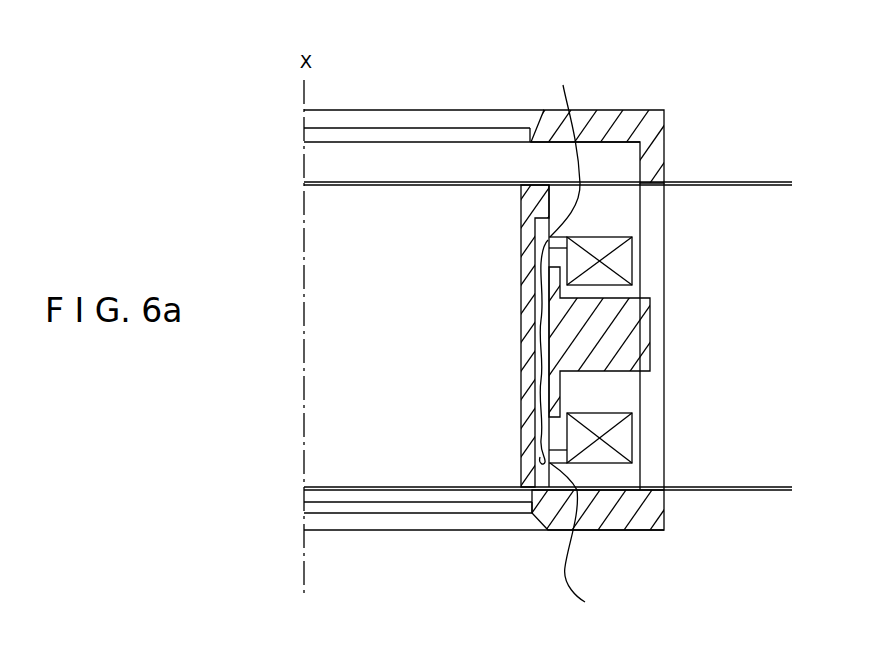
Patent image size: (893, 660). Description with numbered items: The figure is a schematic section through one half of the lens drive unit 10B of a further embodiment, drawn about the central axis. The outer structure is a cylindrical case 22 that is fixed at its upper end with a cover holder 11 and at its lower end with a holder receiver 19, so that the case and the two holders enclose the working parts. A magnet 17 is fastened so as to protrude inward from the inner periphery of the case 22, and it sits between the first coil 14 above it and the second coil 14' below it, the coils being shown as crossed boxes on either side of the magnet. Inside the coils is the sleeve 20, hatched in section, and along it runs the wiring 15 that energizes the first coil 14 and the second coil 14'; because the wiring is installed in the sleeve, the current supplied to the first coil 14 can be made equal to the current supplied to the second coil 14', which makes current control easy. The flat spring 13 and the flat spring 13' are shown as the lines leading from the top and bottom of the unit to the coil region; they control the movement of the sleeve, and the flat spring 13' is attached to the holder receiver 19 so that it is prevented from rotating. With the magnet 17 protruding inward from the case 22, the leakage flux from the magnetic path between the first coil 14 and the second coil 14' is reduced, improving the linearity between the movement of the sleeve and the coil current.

The lens drive unit 10B is at (668, 85).
The cover holder 11 is at (650, 137).
The flat spring 13 is at (565, 147).
The flat spring 13' is at (588, 544).
The first coil 14 is at (657, 261).
The second coil 14' is at (661, 438).
The sleeve 15 is at (540, 455).
The magnet 17 is at (652, 357).
The holder receiver 19 is at (617, 518).
The wiring 20 is at (518, 390).
The cylindrical case 22 is at (655, 398).